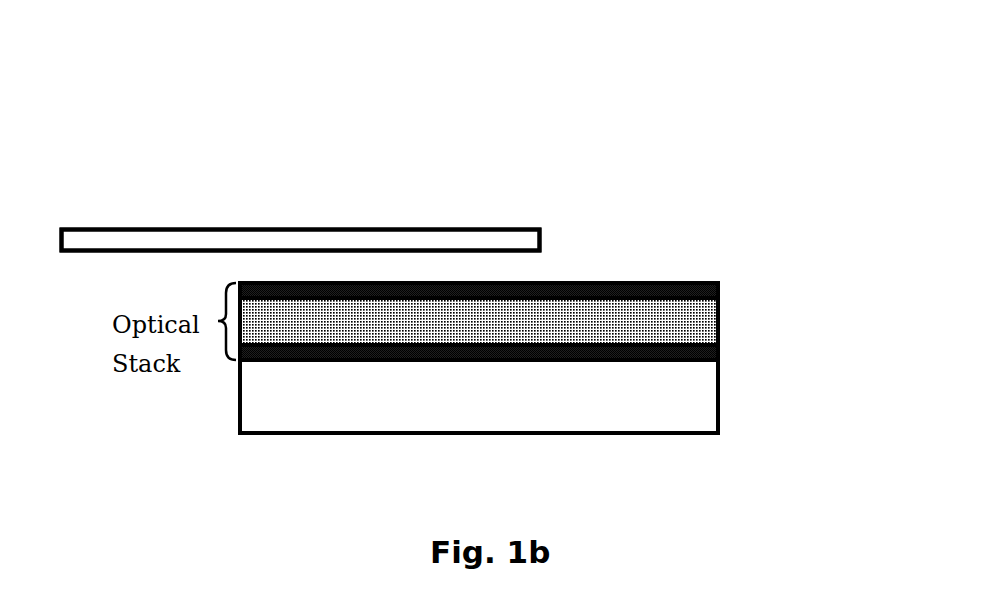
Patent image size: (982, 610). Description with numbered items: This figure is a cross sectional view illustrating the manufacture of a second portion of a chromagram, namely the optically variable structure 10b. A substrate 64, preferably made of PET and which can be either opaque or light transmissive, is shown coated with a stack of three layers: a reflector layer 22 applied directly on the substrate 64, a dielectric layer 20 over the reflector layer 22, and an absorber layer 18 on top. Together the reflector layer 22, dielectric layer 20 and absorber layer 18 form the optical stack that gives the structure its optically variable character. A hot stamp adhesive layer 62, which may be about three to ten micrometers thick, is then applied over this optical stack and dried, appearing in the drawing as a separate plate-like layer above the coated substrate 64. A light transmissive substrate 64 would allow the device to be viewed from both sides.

The optically variable structure 10b is at (171, 133).
The hot stamp adhesive layer 62 is at (535, 222).
The absorber layer 18 is at (736, 290).
The dielectric layer 20 is at (736, 318).
The reflector layer 22 is at (734, 365).
The substrate 64 is at (472, 415).